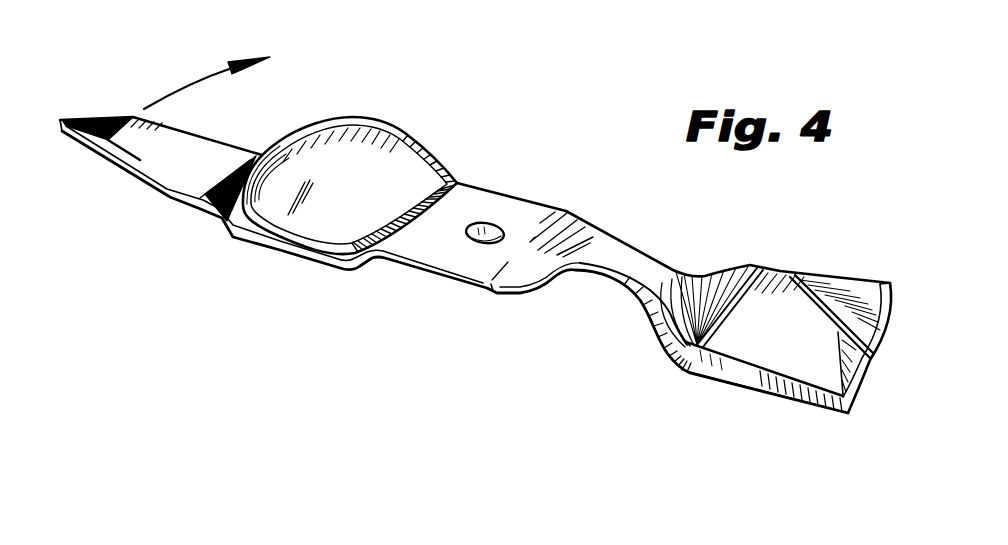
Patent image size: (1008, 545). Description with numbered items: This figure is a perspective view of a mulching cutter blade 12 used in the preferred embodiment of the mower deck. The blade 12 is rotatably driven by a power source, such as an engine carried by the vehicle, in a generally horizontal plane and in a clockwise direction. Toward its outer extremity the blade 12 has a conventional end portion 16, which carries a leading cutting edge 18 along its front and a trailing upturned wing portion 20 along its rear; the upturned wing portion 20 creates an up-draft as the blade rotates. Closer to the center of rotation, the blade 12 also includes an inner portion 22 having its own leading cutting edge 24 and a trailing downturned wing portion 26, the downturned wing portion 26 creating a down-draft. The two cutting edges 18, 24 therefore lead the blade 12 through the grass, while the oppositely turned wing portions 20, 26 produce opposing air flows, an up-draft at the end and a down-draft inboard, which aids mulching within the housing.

The cutter blade 12 is at (475, 235).
The end portion 16 is at (843, 423).
The leading cutting edge 18 is at (765, 392).
The trailing upturned wing portion 20 is at (850, 277).
The inner portion 22 is at (670, 375).
The leading cutting edge 24 is at (647, 323).
The trailing downturned wing portion 26 is at (672, 270).